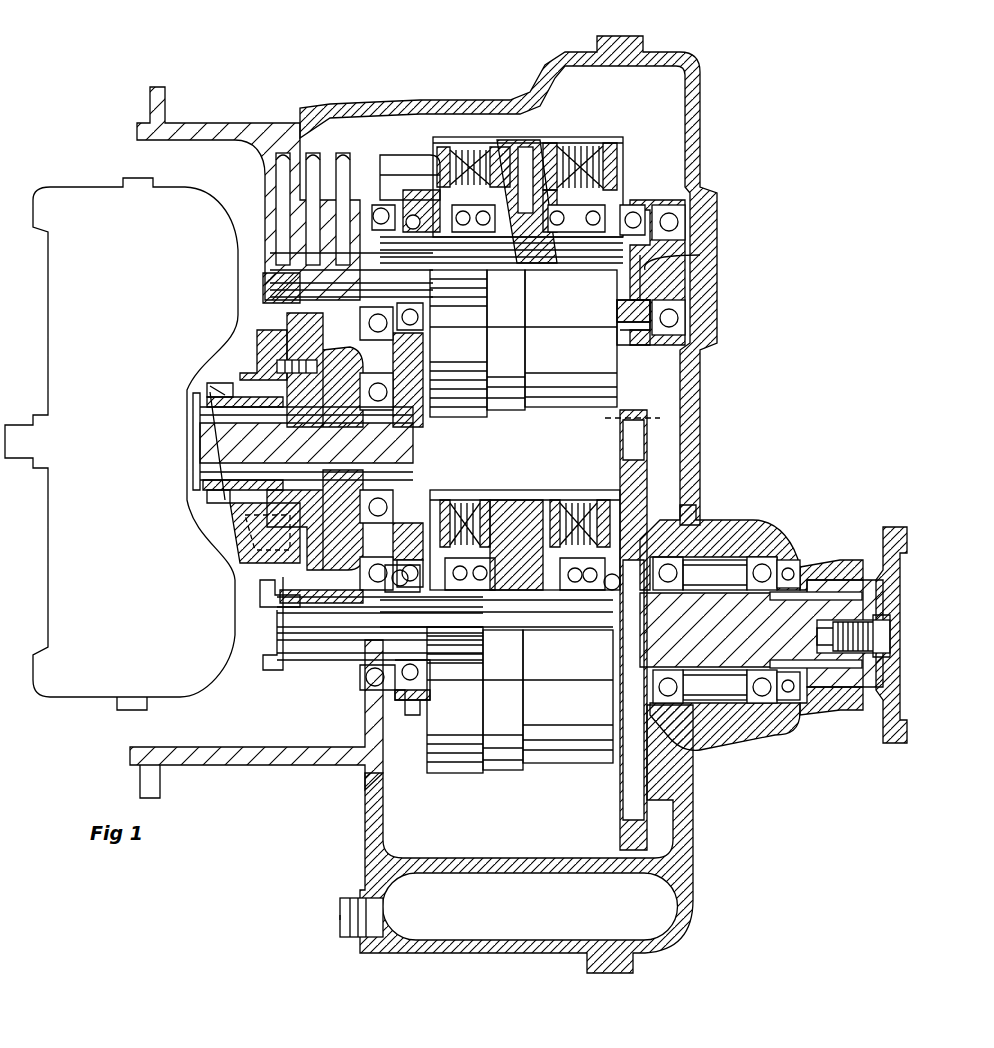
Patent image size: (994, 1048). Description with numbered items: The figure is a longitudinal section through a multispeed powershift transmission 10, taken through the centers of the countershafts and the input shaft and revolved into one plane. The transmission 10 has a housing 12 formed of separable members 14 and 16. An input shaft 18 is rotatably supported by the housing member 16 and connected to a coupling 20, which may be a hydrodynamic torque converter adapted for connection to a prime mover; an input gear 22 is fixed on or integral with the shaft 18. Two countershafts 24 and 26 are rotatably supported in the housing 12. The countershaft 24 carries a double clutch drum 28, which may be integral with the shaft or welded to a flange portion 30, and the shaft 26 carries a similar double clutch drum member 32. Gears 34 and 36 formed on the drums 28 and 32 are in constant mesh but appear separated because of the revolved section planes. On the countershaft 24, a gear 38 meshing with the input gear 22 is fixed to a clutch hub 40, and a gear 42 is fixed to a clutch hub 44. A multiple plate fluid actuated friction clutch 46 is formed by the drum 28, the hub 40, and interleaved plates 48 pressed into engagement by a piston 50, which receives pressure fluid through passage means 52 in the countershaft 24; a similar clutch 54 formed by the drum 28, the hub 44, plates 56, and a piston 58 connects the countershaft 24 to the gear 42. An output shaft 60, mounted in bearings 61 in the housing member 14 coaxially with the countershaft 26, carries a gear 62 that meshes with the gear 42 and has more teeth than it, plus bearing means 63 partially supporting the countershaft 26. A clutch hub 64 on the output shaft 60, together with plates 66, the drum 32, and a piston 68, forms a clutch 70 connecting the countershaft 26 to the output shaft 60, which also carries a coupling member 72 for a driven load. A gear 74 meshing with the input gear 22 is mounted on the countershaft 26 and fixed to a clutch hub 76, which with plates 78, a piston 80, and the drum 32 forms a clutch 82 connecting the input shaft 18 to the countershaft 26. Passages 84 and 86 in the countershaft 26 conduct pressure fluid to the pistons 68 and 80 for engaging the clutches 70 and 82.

The multispeed power transmission 10 is at (445, 32).
The housing 12 is at (508, 58).
The housing member 14 is at (700, 113).
The housing member 16 is at (234, 122).
The input shaft 18 is at (215, 440).
The coupling 20 is at (112, 187).
The input gear 22 is at (425, 492).
The countershaft 24 is at (700, 266).
The countershaft 26 is at (636, 622).
The double clutch drum 28 is at (580, 135).
The flange portion 30 is at (552, 150).
The double clutch drum member 32 is at (558, 490).
The gear 34 is at (462, 135).
The gear 36 is at (456, 775).
The gear 38 is at (420, 175).
The clutch hub 40 is at (487, 280).
The gear 42 is at (633, 345).
The clutch hub 44 is at (563, 275).
The friction clutch 46 is at (400, 84).
The interleaved plates 48 is at (480, 140).
The fluid actuated piston 50 is at (518, 130).
The passage means 52 is at (283, 240).
The clutch 54 is at (655, 122).
The plates 56 is at (645, 100).
The piston 58 is at (575, 150).
The output shaft 60 is at (803, 655).
The bearings 61 is at (693, 705).
The gear 62 is at (645, 445).
The bearing means 63 is at (650, 670).
The clutch hub 64 is at (588, 600).
The interleaved plates 66 is at (640, 512).
The piston 68 is at (547, 600).
The clutch 70 is at (598, 448).
The coupling member 72 is at (892, 750).
The gear 74 is at (412, 722).
The clutch hub 76 is at (480, 600).
The plates 78 is at (470, 500).
The piston 80 is at (508, 500).
The clutch 82 is at (480, 448).
The passage 84 is at (298, 675).
The passage 86 is at (278, 603).